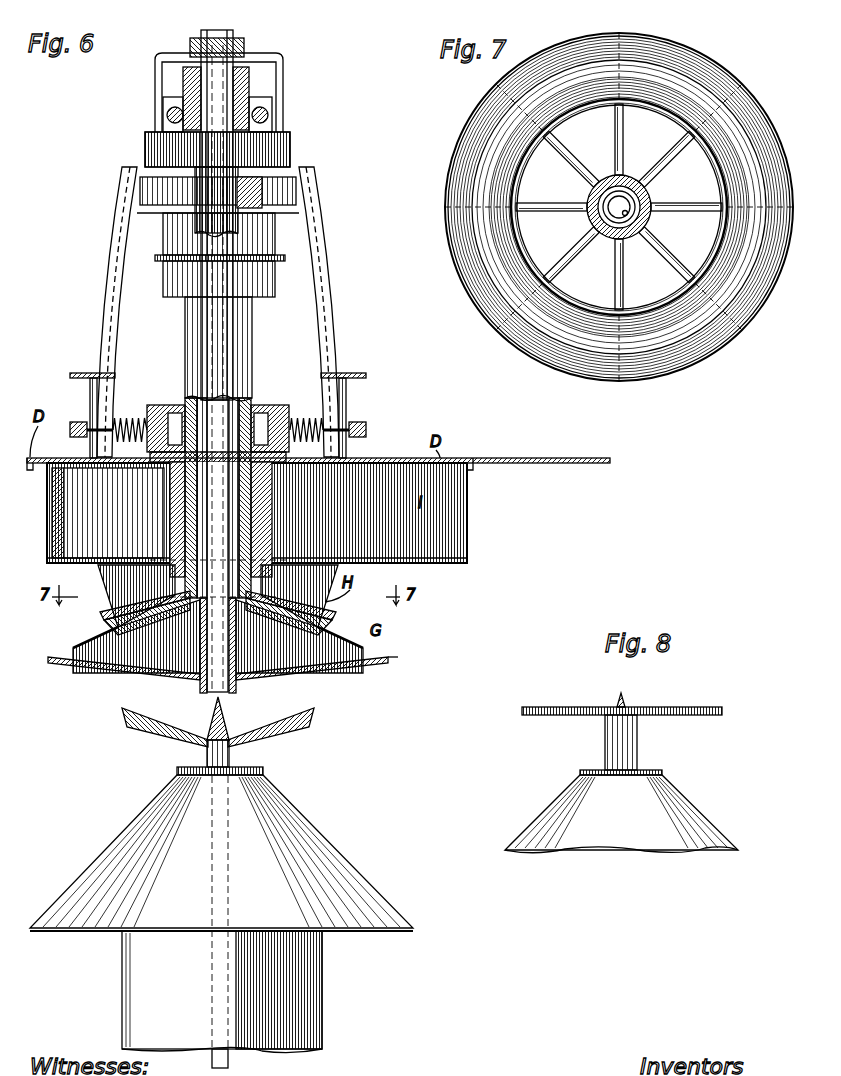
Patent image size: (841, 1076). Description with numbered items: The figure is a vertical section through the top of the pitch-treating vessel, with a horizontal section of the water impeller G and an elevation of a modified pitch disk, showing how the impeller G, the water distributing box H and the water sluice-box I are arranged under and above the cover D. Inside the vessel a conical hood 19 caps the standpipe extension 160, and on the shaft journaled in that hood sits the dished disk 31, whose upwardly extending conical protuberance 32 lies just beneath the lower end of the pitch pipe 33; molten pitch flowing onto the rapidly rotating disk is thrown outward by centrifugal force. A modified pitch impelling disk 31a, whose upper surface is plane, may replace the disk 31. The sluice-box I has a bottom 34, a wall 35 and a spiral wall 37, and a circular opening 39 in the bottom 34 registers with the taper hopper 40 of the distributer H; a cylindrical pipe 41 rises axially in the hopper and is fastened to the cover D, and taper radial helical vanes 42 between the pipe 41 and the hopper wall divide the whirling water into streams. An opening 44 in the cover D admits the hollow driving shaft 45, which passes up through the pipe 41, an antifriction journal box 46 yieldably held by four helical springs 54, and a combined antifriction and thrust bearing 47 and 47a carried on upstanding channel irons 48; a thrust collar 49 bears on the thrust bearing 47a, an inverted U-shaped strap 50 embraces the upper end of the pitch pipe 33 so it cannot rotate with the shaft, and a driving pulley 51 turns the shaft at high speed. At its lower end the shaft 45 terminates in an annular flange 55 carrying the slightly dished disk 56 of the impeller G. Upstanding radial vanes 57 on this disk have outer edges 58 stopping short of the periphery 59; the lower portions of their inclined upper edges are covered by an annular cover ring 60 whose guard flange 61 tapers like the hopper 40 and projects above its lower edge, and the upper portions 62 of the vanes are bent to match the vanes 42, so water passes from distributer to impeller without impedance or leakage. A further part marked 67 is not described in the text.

In FIG. 6, the conical hood 19 is at (221, 853).
In FIG. 8, the conical hood 19 is at (621, 811).
In FIG. 6, the dished disk 31 is at (262, 732).
In FIG. 8, the pitch impelling disk 31a is at (722, 712).
In FIG. 6, the conical protuberance 32 is at (226, 722).
In FIG. 6, the pitch pipe 33 is at (224, 40).
In FIG. 7, the pitch pipe 33 is at (652, 213).
In FIG. 6, the bottom 34 is at (365, 558).
In FIG. 6, the wall 35 is at (465, 525).
In FIG. 6, the spiral wall 37 is at (66, 513).
In FIG. 6, the circular opening 39 is at (132, 560).
In FIG. 6, the taper hopper 40 is at (100, 580).
In FIG. 6, the cylindrical pipe 41 is at (252, 517).
In FIG. 6, the helical vanes 42 is at (145, 584).
In FIG. 6, the opening 44 is at (272, 470).
In FIG. 6, the driving shaft 45 is at (250, 340).
In FIG. 7, the driving shaft 45 is at (624, 185).
In FIG. 6, the antifriction journal box 46 is at (281, 402).
In FIG. 6, the antifriction bearing 47 is at (262, 198).
In FIG. 6, the thrust bearing 47a is at (268, 152).
In FIG. 6, the channel irons 48 is at (212, 215).
In FIG. 6, the thrust collar 49 is at (270, 126).
In FIG. 6, the inverted U-shaped strap 50 is at (283, 73).
In FIG. 7, the inverted U-shaped strap 50 is at (619, 219).
In FIG. 6, the driving pulley 51 is at (163, 282).
In FIG. 6, the helical springs 54 is at (218, 416).
In FIG. 6, the annular flange 55 is at (200, 680).
In FIG. 6, the dished disk 56 is at (380, 656).
In FIG. 6, the radial vanes 57 is at (136, 636).
In FIG. 7, the radial vanes 57 is at (618, 207).
In FIG. 6, the outer edges 58 is at (367, 650).
In FIG. 7, the outer edges 58 is at (600, 215).
In FIG. 6, the periphery 59 is at (390, 660).
In FIG. 7, the periphery 59 is at (619, 218).
In FIG. 6, the annular cover ring 60 is at (100, 640).
In FIG. 7, the annular cover ring 60 is at (618, 207).
In FIG. 6, the guard flange 61 is at (116, 603).
In FIG. 7, the guard flange 61 is at (619, 207).
In FIG. 6, the upper portions of the vanes 62 is at (218, 617).
In FIG. 7, the upper portions of the vanes 62 is at (619, 206).
In FIG. 6, the disc section 67 is at (299, 636).
In FIG. 6, the standpipe extension 160 is at (222, 999).